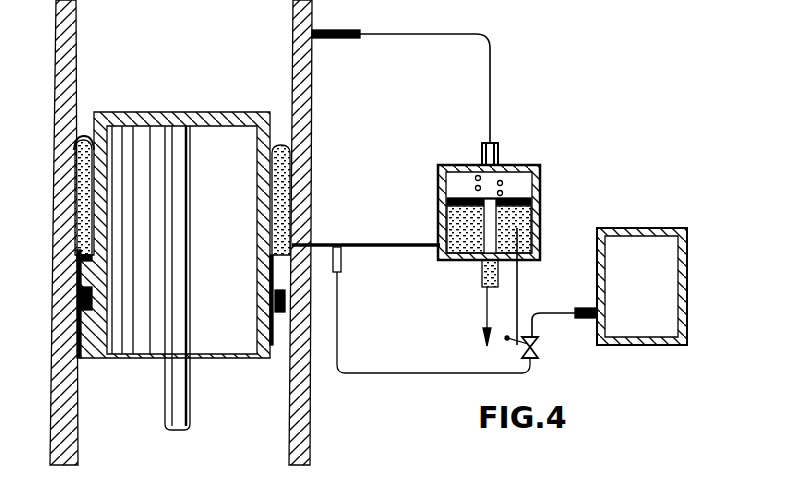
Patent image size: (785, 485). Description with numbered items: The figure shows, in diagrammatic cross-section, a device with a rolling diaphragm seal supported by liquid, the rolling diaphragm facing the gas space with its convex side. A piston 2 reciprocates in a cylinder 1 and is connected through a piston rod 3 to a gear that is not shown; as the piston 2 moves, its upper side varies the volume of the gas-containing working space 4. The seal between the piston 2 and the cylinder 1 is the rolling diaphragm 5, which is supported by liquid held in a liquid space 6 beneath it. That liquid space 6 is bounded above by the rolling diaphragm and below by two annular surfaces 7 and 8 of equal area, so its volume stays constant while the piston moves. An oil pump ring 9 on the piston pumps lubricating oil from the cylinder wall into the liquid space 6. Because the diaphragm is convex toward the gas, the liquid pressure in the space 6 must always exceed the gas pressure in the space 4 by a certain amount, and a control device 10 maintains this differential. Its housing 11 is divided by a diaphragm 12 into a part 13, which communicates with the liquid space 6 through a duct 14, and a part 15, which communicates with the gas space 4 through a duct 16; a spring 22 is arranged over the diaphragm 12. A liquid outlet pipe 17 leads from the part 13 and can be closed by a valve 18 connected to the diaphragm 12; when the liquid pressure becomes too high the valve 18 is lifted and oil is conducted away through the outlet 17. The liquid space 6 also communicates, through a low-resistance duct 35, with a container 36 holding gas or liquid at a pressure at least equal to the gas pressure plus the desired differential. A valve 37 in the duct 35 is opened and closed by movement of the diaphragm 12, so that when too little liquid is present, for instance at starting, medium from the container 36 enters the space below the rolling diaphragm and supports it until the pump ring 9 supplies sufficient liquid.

The cylinder 1 is at (60, 57).
The piston 2 is at (78, 334).
The piston rod 3 is at (184, 407).
The working space 4 is at (191, 71).
The rolling diaphragm 5 is at (76, 140).
The liquid space 6 is at (76, 221).
The annular surface 7 is at (76, 258).
The annular surface 8 is at (288, 284).
The oil pump ring 9 is at (80, 296).
The control device 10 is at (501, 228).
The housing 11 is at (537, 228).
The diaphragm 12 is at (508, 202).
The part 13 is at (460, 250).
The duct 14 is at (347, 243).
The part 15 is at (512, 172).
The duct 16 is at (490, 81).
The liquid outlet pipe 17 is at (482, 318).
The valve 18 is at (447, 218).
The spring 22 is at (472, 188).
The duct 35 is at (375, 372).
The container 36 is at (640, 229).
The valve 37 is at (540, 352).